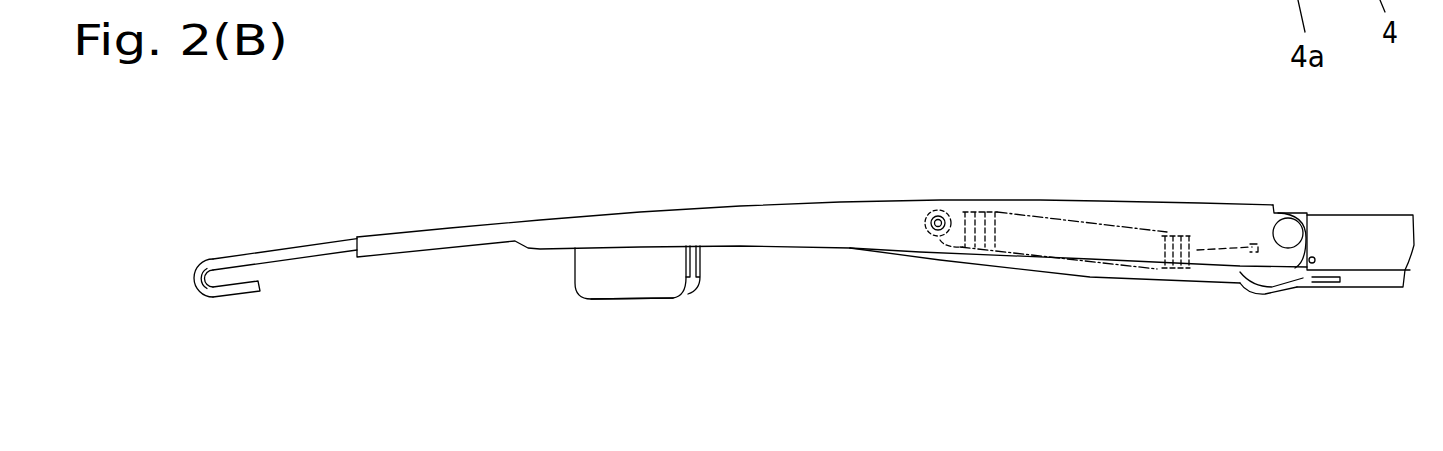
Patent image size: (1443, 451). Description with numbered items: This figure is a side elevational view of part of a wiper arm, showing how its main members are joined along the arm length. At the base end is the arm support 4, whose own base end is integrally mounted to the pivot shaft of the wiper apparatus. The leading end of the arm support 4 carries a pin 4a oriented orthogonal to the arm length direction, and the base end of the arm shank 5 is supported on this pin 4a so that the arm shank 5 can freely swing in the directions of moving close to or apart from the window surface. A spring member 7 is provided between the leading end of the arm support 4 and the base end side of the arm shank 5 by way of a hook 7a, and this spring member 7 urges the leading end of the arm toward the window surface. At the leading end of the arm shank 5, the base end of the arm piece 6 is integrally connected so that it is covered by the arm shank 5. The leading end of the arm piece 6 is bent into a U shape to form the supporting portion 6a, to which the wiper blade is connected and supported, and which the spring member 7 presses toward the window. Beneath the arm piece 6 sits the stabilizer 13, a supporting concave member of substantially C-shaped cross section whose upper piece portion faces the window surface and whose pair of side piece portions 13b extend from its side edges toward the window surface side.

The arm support 4 is at (1343, 192).
The pin 4a is at (1288, 230).
The arm shank 5 is at (1174, 197).
The arm piece 6 is at (275, 260).
The supporting portion 6a is at (239, 297).
The spring member 7 is at (1076, 297).
The hook 7a is at (1280, 290).
The stabilizer 13 is at (664, 314).
The side piece portions 13b is at (642, 277).